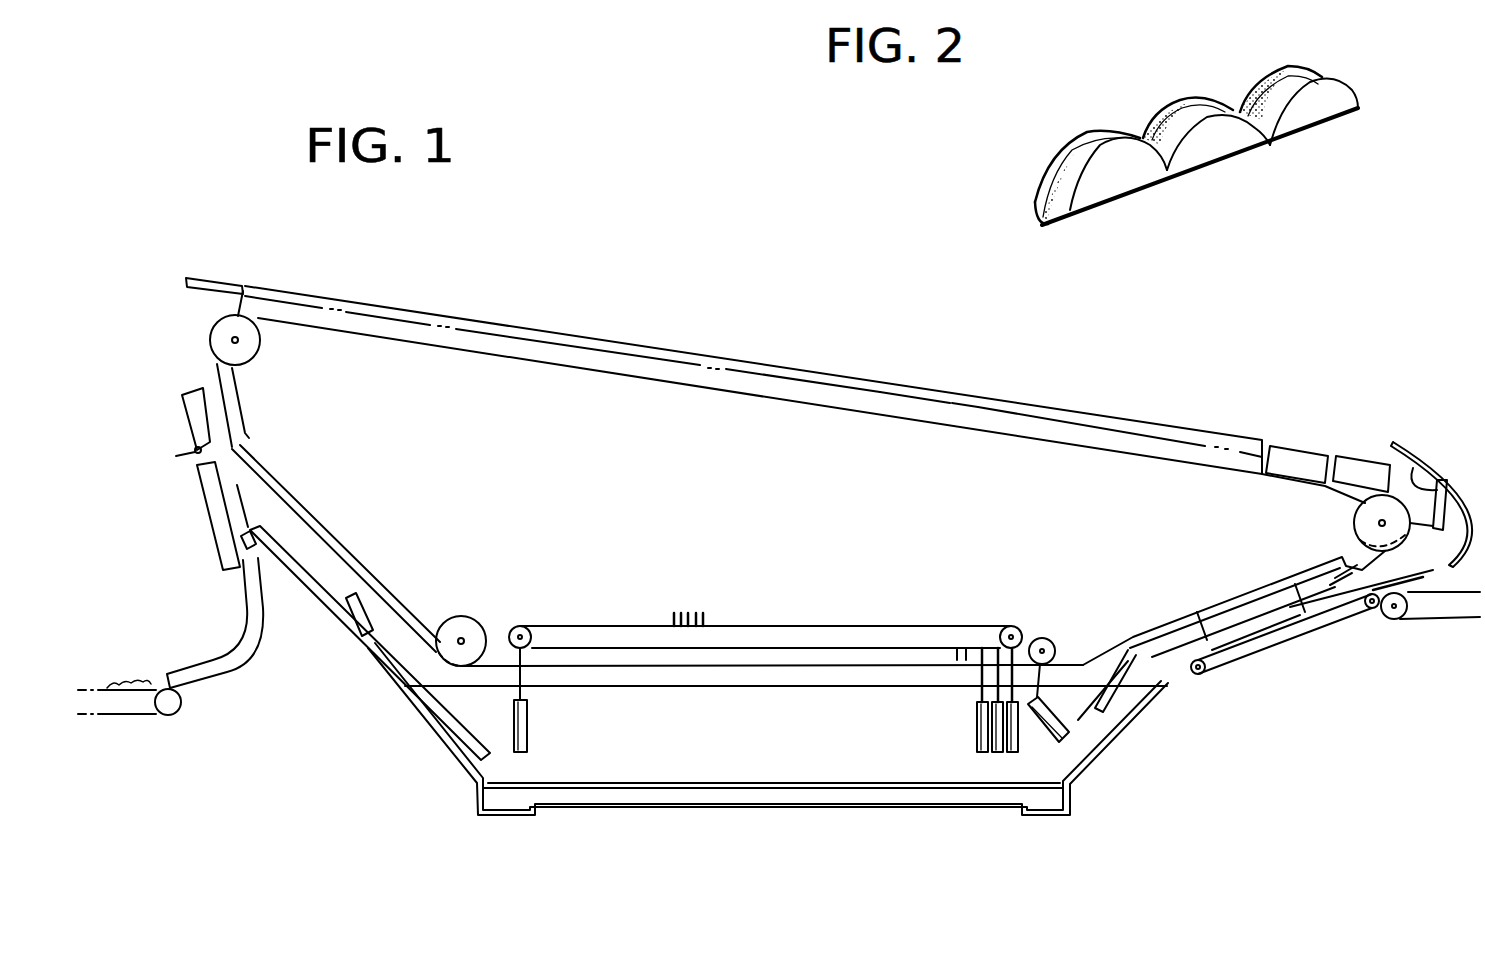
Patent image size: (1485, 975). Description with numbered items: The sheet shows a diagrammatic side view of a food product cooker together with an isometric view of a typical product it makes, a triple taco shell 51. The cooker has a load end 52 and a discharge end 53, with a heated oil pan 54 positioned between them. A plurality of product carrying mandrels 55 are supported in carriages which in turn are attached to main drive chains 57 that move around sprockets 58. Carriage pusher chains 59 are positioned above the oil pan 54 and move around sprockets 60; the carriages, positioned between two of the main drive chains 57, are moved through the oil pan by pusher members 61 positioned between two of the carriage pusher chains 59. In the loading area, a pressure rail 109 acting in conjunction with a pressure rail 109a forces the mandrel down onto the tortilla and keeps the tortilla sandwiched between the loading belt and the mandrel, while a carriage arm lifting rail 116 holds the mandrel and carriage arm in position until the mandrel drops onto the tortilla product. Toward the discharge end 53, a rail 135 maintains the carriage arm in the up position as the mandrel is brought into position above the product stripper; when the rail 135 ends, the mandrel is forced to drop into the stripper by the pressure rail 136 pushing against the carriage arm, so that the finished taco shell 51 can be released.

In FIG. 2, the triple taco shell 51 is at (1207, 173).
In FIG. 1, the load end 52 is at (1290, 649).
In FIG. 1, the discharge end 53 is at (381, 515).
In FIG. 1, the heated oil pan 54 is at (762, 762).
In FIG. 1, the product carrying mandrels 55 is at (976, 726).
In FIG. 1, the main drive chains 57 is at (1093, 660).
In FIG. 1, the sprockets 58 is at (222, 348).
In FIG. 1, the carriage pusher chains 59 is at (896, 622).
In FIG. 1, the sprockets 60 is at (524, 626).
In FIG. 1, the pusher members 61 is at (708, 618).
In FIG. 1, the pressure rail 109 is at (1276, 585).
In FIG. 1, the pressure rail 109a is at (1203, 636).
In FIG. 1, the carriage arm lifting rail 116 is at (1348, 572).
In FIG. 1, the rail 135 is at (284, 474).
In FIG. 1, the pressure rail 136 is at (234, 410).